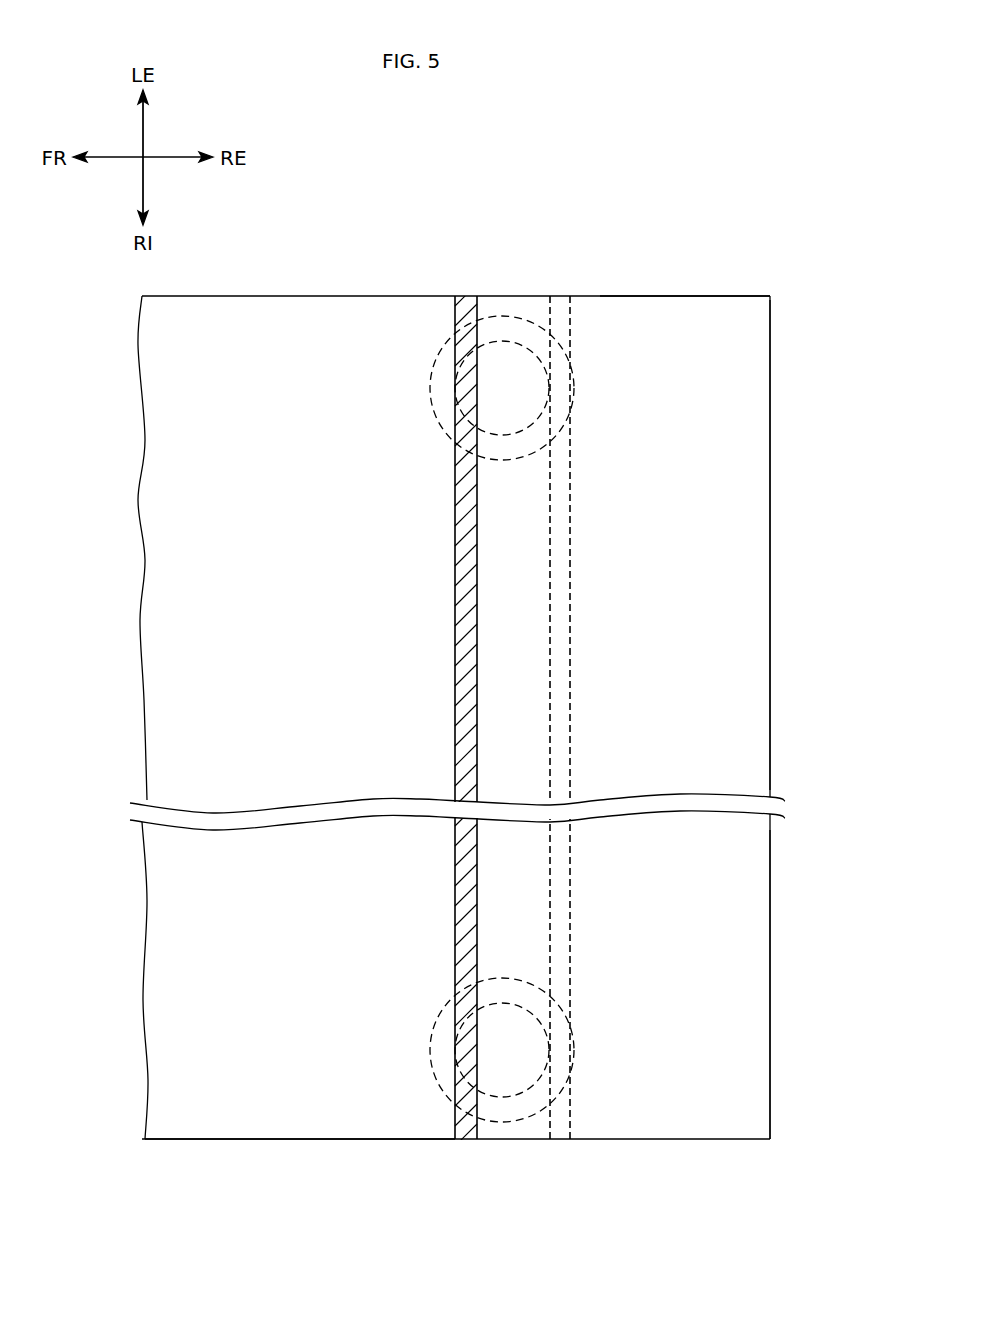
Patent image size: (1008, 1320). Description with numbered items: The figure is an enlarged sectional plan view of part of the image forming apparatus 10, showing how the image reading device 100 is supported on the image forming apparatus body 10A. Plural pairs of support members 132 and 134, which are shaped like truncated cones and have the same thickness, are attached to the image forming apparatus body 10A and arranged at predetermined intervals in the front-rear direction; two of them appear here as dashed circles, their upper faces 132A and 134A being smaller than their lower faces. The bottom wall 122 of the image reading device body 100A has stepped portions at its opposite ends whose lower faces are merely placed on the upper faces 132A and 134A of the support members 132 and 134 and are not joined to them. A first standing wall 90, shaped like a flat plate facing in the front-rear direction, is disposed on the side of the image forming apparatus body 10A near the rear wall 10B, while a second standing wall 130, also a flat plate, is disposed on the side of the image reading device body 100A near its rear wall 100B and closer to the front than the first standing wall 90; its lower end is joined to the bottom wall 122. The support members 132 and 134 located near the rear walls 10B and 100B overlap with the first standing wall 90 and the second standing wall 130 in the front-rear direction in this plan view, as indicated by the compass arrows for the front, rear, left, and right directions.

The image forming apparatus 10 is at (468, 713).
The image forming apparatus body 10A is at (724, 410).
The rear wall 10B is at (770, 522).
The first standing wall 90 is at (568, 608).
The image reading device 100 is at (468, 717).
The image reading device body 100A is at (300, 1103).
The rear wall 100B is at (770, 950).
The bottom wall 122 is at (168, 679).
The second standing wall 130 is at (466, 663).
The support member 132 is at (508, 320).
The upper face 132A is at (516, 373).
The support member 134 is at (514, 1112).
The upper face 134A is at (523, 1044).